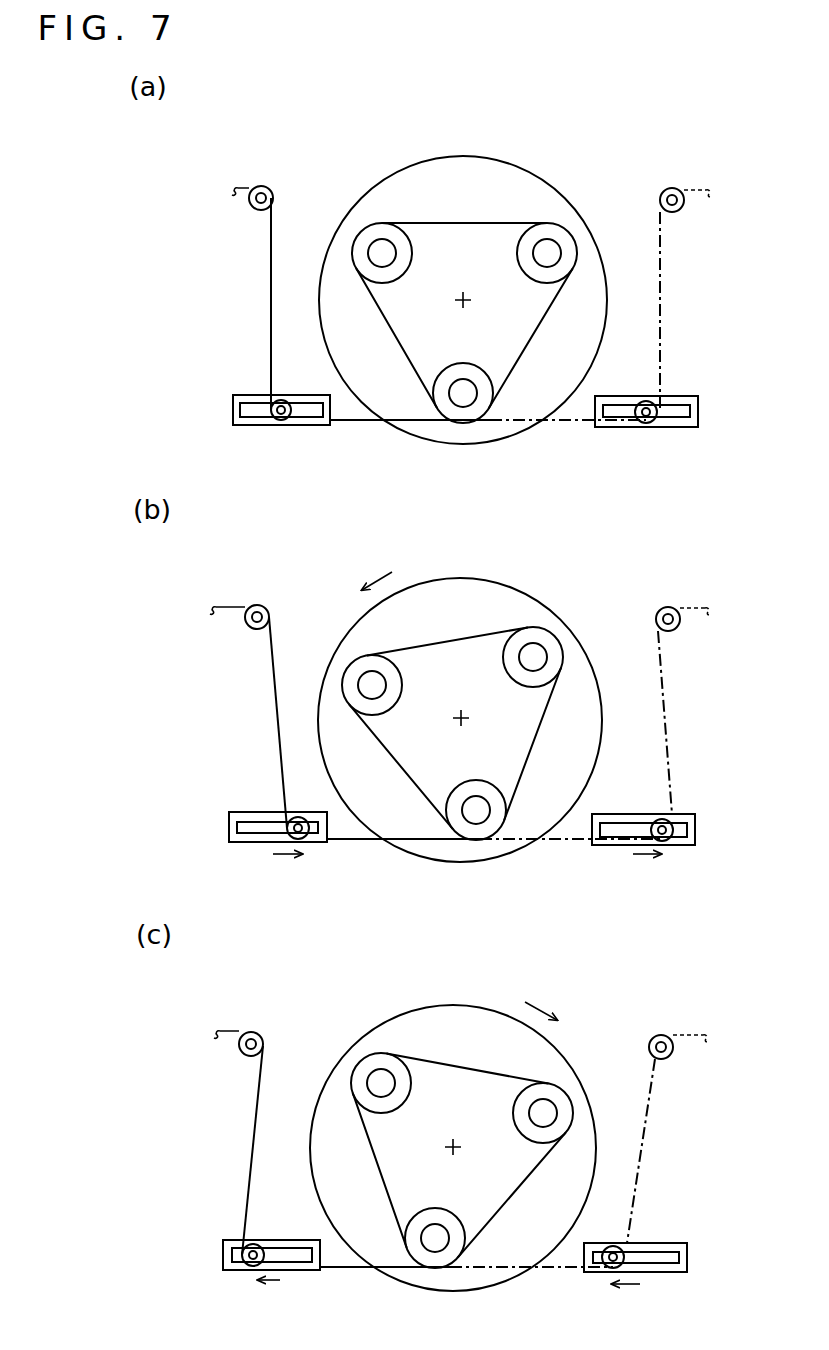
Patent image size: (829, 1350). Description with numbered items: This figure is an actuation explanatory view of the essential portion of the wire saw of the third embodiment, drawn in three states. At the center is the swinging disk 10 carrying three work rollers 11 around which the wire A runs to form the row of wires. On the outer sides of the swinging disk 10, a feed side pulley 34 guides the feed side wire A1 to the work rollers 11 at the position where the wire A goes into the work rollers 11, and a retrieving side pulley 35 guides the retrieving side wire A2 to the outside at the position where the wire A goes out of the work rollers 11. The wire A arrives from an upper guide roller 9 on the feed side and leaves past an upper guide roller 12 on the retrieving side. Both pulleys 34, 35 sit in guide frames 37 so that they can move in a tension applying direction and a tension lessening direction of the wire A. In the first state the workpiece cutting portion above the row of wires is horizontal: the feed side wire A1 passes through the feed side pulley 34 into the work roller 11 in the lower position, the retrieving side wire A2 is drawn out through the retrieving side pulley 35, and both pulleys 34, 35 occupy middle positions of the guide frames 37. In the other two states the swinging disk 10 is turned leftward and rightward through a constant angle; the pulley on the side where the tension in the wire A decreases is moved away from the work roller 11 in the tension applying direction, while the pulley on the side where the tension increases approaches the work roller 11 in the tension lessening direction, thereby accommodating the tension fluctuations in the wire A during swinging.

The guide roller 9 is at (261, 185).
The swinging disk 10 is at (387, 188).
The work rollers 11 is at (477, 373).
The guide roller 12 is at (668, 188).
The feed side pulley 34 is at (278, 423).
The retrieving side pulley 35 is at (648, 425).
The guide frames 37 is at (233, 402).
The wire A is at (268, 258).
The feed side wire A1 is at (268, 332).
The retrieving side wire A2 is at (662, 313).